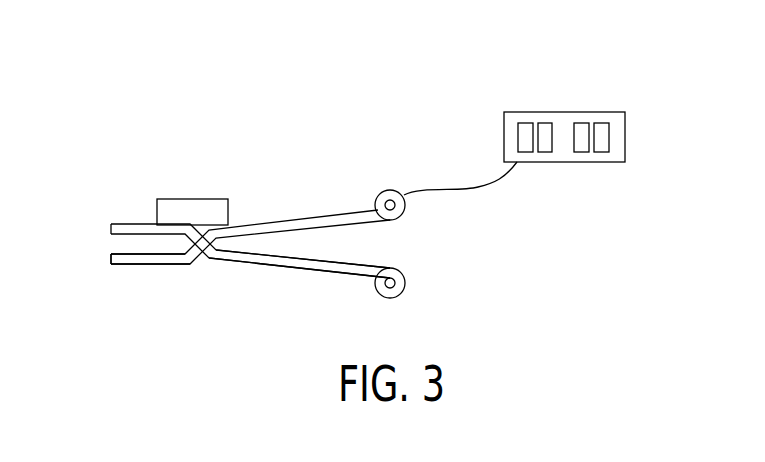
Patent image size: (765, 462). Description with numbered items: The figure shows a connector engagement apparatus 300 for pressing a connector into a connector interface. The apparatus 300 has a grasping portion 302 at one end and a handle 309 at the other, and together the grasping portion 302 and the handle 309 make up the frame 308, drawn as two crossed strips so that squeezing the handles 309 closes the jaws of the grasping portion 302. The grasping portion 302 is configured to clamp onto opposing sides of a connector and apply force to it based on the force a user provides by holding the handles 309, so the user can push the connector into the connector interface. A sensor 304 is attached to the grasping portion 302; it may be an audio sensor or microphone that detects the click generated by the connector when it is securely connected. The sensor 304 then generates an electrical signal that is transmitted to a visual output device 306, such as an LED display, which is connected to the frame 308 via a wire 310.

The connector engagement apparatus 300 is at (339, 111).
The grasping portion 302 is at (137, 265).
The sensor 304 is at (197, 199).
The visual output device 306 is at (563, 112).
The frame 308 is at (238, 282).
The handle 309 is at (324, 271).
The wire 310 is at (508, 188).